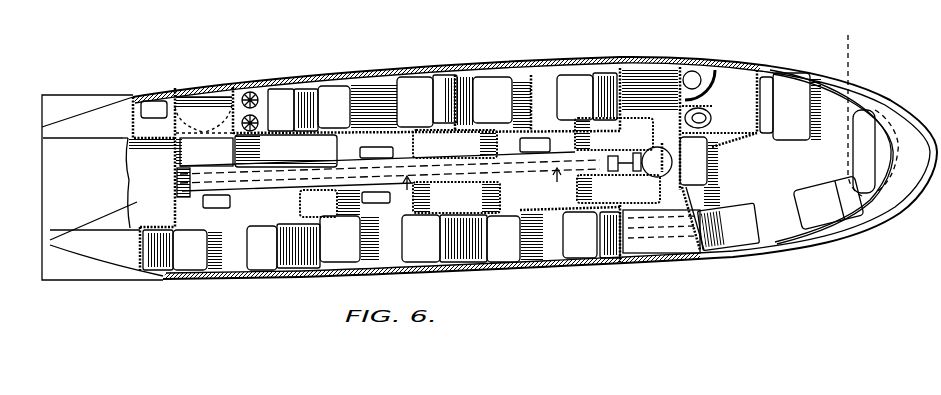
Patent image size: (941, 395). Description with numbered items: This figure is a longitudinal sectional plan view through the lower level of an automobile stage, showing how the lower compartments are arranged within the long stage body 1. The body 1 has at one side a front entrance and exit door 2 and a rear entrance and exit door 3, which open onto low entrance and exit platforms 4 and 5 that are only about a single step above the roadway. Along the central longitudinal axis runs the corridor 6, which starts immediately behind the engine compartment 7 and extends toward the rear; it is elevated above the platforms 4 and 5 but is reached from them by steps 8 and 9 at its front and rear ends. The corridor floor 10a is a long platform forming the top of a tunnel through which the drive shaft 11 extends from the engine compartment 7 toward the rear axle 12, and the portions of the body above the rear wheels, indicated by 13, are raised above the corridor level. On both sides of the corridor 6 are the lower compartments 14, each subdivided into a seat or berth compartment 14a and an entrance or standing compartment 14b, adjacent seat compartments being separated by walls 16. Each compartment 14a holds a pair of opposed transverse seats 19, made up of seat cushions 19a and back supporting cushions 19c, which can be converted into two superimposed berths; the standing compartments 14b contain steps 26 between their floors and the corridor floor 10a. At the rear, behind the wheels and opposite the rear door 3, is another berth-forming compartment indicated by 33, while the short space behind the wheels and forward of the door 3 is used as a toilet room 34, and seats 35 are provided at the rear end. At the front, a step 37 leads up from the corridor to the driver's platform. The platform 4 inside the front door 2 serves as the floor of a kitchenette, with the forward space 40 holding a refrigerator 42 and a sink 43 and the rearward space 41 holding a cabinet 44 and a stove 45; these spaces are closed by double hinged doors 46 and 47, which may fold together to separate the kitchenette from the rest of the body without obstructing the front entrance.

The stage body 1 is at (205, 283).
The front entrance and exit door 2 is at (190, 88).
The rear entrance and exit door 3 is at (823, 82).
The front entrance and exit platform 4 is at (207, 97).
The rear entrance and exit platform 5 is at (830, 98).
The corridor 6 is at (277, 185).
The engine compartment 7 is at (50, 240).
The front steps 8 is at (185, 152).
The rear steps 9 is at (700, 172).
The corridor floor 10a is at (373, 194).
The drive shaft 11 is at (588, 180).
The rear axle 12 is at (677, 247).
The raised portions above rear wheels 13 is at (640, 243).
The lower compartments 14 is at (517, 90).
The lower seat or berth compartments 14a is at (545, 82).
The lower entrance or standing compartments 14b is at (558, 127).
The partition walls 16 is at (463, 80).
The seats 19 is at (405, 100).
The seat cushions 19a is at (415, 87).
The back supporting cushions 19c is at (442, 83).
The steps 26 is at (220, 208).
The rear lower compartment 33 is at (797, 218).
The toilet room 34 is at (717, 83).
The rear seats 35 is at (778, 82).
The step 37 is at (182, 178).
The forward storage space 40 is at (142, 102).
The rearward storage space 41 is at (264, 92).
The refrigerator 42 is at (147, 125).
The sink 43 is at (157, 100).
The cabinet 44 is at (284, 90).
The stove 45 is at (250, 87).
The double hinged doors 46 is at (180, 97).
The double hinged doors 47 is at (222, 90).